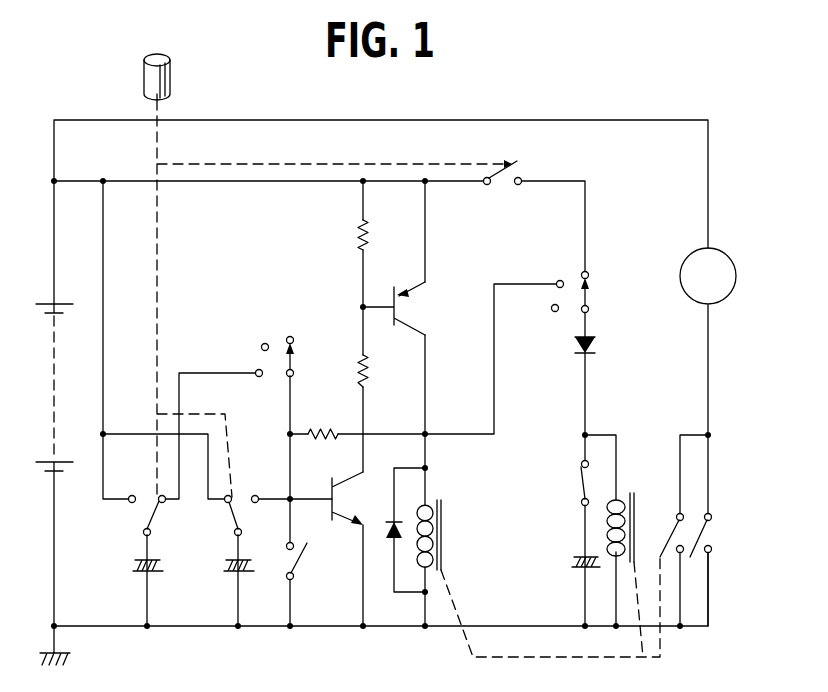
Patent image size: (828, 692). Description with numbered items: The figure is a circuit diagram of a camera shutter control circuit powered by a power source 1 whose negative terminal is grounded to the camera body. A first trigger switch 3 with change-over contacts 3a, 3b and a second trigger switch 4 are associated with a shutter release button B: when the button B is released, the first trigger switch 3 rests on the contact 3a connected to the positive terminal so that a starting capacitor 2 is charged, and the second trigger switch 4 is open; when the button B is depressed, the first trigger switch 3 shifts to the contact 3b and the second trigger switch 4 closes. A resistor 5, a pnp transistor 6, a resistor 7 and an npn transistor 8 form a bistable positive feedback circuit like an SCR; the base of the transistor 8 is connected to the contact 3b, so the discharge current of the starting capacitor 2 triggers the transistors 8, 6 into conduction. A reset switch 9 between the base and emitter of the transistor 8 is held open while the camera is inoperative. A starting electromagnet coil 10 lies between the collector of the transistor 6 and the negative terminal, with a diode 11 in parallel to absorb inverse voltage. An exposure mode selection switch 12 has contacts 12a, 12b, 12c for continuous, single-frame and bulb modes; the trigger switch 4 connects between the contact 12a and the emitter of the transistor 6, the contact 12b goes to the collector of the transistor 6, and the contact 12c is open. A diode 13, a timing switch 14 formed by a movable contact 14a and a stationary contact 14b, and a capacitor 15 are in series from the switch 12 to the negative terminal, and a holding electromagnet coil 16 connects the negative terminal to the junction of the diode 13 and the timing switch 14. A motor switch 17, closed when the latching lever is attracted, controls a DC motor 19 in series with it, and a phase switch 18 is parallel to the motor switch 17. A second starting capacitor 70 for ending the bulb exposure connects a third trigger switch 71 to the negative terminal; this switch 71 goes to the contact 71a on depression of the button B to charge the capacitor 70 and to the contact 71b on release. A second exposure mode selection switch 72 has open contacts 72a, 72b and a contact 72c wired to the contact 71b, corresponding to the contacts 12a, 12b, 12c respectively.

The shutter release button B is at (168, 77).
The power source 1 is at (54, 413).
The starting capacitor 2 is at (225, 568).
The first trigger switch 3 is at (240, 497).
The contact of first trigger switch 3a is at (227, 503).
The contact of first trigger switch 3b is at (256, 503).
The second trigger switch 4 is at (510, 163).
The resistor 5 is at (367, 368).
The pnp transistor 6 is at (398, 305).
The resistor 7 is at (322, 430).
The npn transistor 8 is at (338, 496).
The reset switch 9 is at (300, 562).
The starting electromagnet coil 10 is at (444, 525).
The diode 11 is at (391, 540).
The exposure mode selection switch 12 is at (589, 300).
The contact of exposure mode selection switch 12a is at (589, 274).
The contact of exposure mode selection switch 12b is at (558, 281).
The contact of exposure mode selection switch 12c is at (555, 312).
The diode 13 is at (596, 343).
The timing switch 14 is at (582, 504).
The movable contact 14a is at (580, 484).
The stationary contact 14b is at (582, 462).
The capacitor 15 is at (573, 562).
The holding electromagnet coil 16 is at (633, 490).
The motor switch 17 is at (668, 533).
The phase switch 18 is at (712, 529).
The DC motor 19 is at (718, 250).
The second starting capacitor 70 is at (133, 566).
The third trigger switch 71 is at (148, 497).
The contact of third trigger switch 71a is at (131, 503).
The contact of third trigger switch 71b is at (164, 503).
The second exposure mode selection switch 72 is at (293, 360).
The contact of second exposure mode selection switch 72a is at (291, 337).
The contact of second exposure mode selection switch 72b is at (262, 345).
The contact of second exposure mode selection switch 72c is at (256, 372).